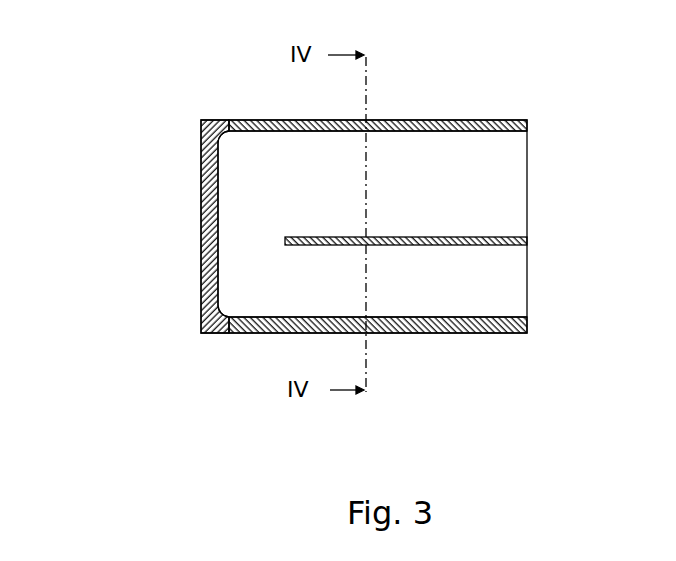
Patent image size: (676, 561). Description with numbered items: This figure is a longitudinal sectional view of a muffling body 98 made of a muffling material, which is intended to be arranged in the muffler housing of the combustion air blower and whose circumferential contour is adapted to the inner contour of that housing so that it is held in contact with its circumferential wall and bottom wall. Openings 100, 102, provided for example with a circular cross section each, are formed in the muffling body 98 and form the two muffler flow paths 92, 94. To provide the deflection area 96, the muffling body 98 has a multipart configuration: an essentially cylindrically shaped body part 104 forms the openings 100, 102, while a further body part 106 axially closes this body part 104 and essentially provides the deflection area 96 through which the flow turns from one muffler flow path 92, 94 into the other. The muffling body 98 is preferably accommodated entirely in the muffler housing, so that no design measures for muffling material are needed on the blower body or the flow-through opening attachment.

The muffler flow path 92 is at (470, 294).
The muffler flow path 94 is at (422, 167).
The deflection area 96 is at (236, 231).
The muffling body 98 is at (573, 82).
The opening 100 is at (512, 313).
The opening 102 is at (500, 132).
The body part 104 is at (435, 325).
The body part 106 is at (207, 240).